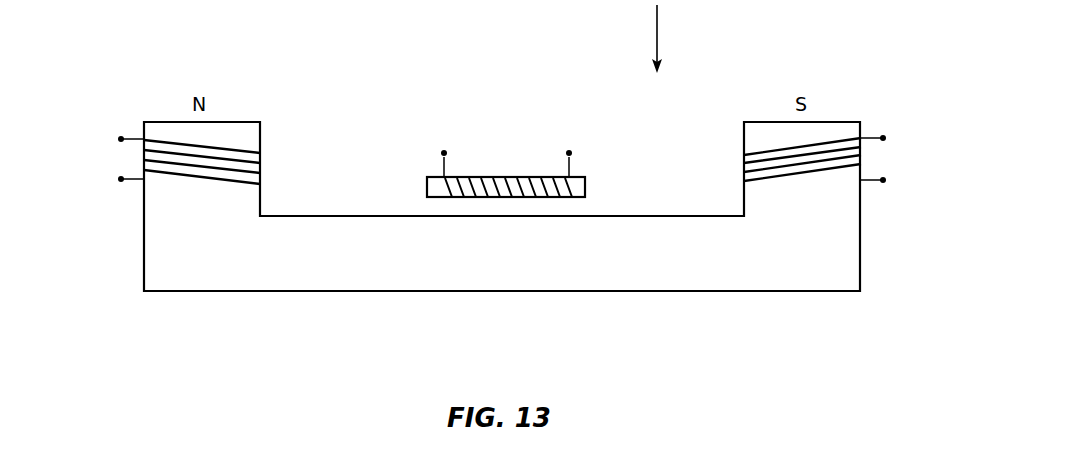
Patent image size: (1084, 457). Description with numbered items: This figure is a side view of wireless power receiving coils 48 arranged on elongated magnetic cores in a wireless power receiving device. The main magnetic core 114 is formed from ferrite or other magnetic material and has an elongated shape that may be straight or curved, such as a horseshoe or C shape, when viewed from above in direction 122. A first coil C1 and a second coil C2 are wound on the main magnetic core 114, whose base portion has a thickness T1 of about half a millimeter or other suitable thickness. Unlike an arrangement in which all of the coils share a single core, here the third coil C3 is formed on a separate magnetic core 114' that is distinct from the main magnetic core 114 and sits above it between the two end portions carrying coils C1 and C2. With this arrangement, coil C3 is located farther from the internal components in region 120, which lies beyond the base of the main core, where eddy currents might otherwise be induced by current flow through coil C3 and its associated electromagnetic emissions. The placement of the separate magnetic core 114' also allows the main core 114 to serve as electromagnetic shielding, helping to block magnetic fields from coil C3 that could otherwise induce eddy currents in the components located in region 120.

The coils 48 is at (119, 158).
The magnetic core 114 is at (502, 242).
The magnetic core 114' is at (544, 180).
The region 120 is at (517, 308).
The direction 122 is at (660, 32).
The coil C1 is at (273, 140).
The coil C2 is at (731, 140).
The coil C3 is at (563, 165).
The thickness T1 is at (657, 217).